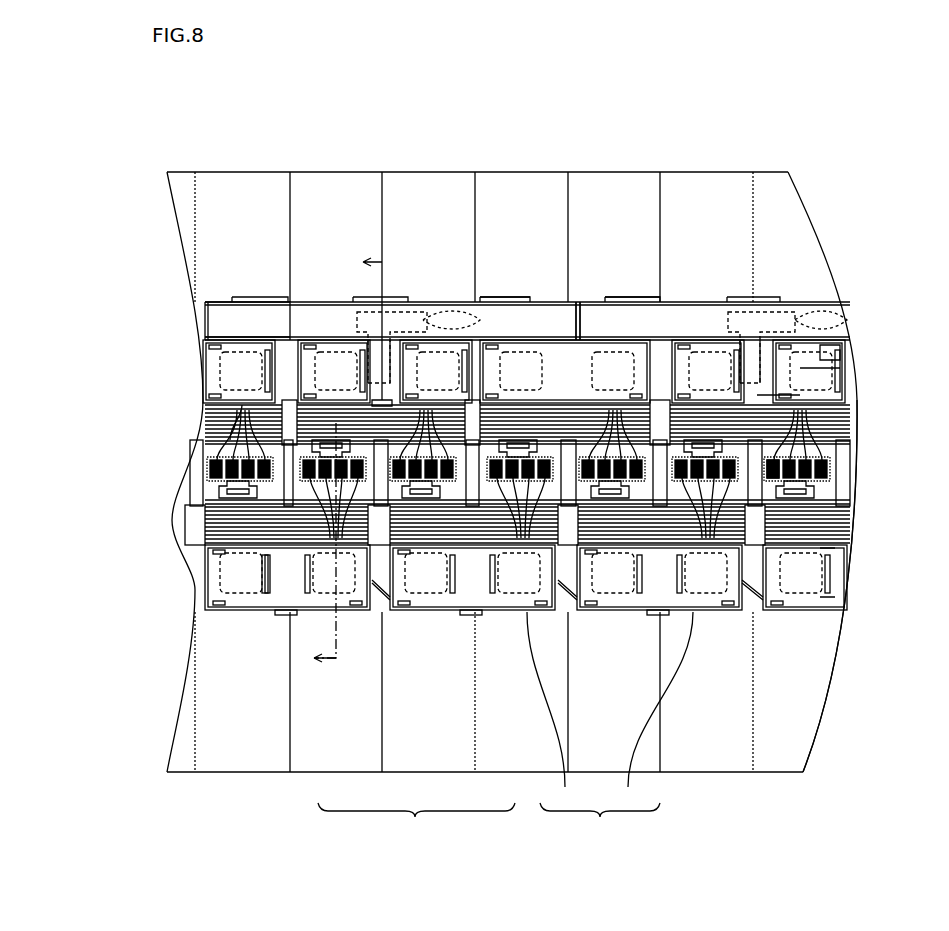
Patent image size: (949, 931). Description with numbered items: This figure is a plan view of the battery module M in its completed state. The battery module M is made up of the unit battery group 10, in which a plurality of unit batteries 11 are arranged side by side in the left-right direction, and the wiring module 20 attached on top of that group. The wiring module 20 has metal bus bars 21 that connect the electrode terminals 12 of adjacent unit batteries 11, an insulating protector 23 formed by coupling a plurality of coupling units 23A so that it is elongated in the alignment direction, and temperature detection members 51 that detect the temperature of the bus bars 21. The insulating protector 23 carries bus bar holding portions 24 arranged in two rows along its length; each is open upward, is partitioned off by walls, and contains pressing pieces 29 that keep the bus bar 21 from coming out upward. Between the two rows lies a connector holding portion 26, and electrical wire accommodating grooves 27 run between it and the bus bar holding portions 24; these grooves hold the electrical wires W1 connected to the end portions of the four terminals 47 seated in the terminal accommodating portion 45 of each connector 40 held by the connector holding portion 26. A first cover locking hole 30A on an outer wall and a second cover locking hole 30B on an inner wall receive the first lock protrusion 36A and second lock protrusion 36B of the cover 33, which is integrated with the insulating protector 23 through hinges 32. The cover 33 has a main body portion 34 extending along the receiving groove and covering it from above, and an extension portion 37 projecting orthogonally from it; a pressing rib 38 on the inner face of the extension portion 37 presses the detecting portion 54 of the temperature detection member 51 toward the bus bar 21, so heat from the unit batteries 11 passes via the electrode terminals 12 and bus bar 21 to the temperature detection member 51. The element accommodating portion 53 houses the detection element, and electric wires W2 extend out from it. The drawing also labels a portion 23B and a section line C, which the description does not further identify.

The unit battery group 10 is at (416, 823).
The unit battery 11 is at (504, 745).
The electrode terminal 12 is at (815, 600).
The wiring module 20 is at (818, 294).
The bus bar 21 is at (213, 377).
The insulating protector 23 is at (600, 823).
The coupling unit 23A is at (651, 710).
The second holder portion 23B is at (558, 710).
The bus bar holding portion 24 is at (255, 593).
The connector holding portion 26 is at (515, 474).
The electrical wire accommodating groove 27 is at (218, 414).
The pressing piece 29 is at (827, 597).
The first cover locking hole 30A is at (278, 340).
The second cover locking hole 30B is at (378, 402).
The hinge 32 is at (507, 297).
The cover 33 is at (693, 318).
The main body portion 34 is at (598, 313).
The first lock protrusion 36A is at (288, 337).
The second lock protrusion 36B is at (388, 400).
The extension portion 37 is at (757, 395).
The pressing rib 38 is at (795, 374).
The connector 40 is at (830, 453).
The terminal accommodating portion 45 is at (833, 472).
The terminal 47 is at (833, 467).
The temperature detection member 51 is at (762, 303).
The element accommodating portion 53 is at (737, 300).
The detecting portion 54 is at (765, 355).
The battery module M is at (832, 186).
The electrical wire W1 is at (800, 413).
The electric wire W2 is at (845, 330).
The section line C is at (337, 460).